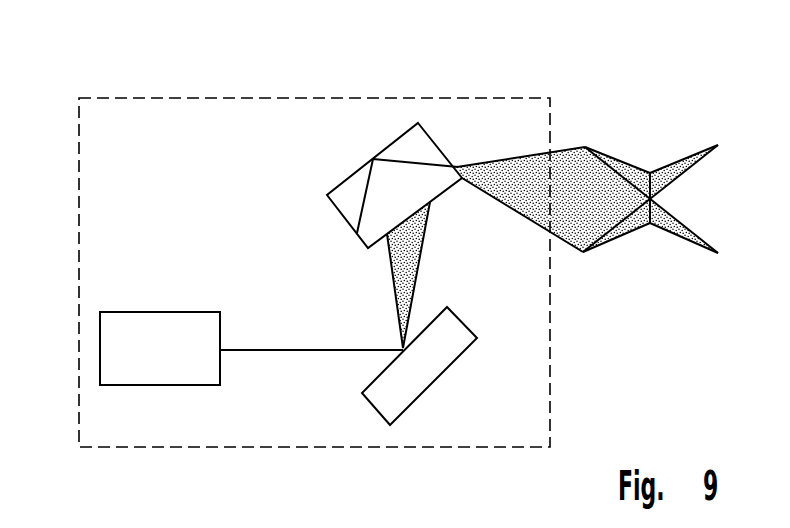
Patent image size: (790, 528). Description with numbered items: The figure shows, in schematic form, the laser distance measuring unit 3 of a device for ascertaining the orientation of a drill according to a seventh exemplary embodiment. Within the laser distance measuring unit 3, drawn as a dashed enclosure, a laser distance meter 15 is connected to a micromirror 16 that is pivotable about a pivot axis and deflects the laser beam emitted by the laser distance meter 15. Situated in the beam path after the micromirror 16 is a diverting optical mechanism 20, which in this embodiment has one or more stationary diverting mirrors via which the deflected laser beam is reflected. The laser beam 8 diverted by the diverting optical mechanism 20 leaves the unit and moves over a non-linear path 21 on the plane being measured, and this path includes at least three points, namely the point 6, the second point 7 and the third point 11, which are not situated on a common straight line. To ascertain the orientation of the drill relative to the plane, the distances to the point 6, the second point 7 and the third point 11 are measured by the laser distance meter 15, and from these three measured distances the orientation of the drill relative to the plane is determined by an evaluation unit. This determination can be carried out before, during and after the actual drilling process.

The laser distance measuring unit 3 is at (220, 118).
The point 6 is at (650, 175).
The second point 7 is at (610, 164).
The laser beam 8 is at (575, 228).
The third point 11 is at (620, 226).
The laser distance meter 15 is at (162, 326).
The micromirror 16 is at (440, 365).
The diverting optical mechanism 20 is at (348, 191).
The non-linear path 21 is at (699, 155).